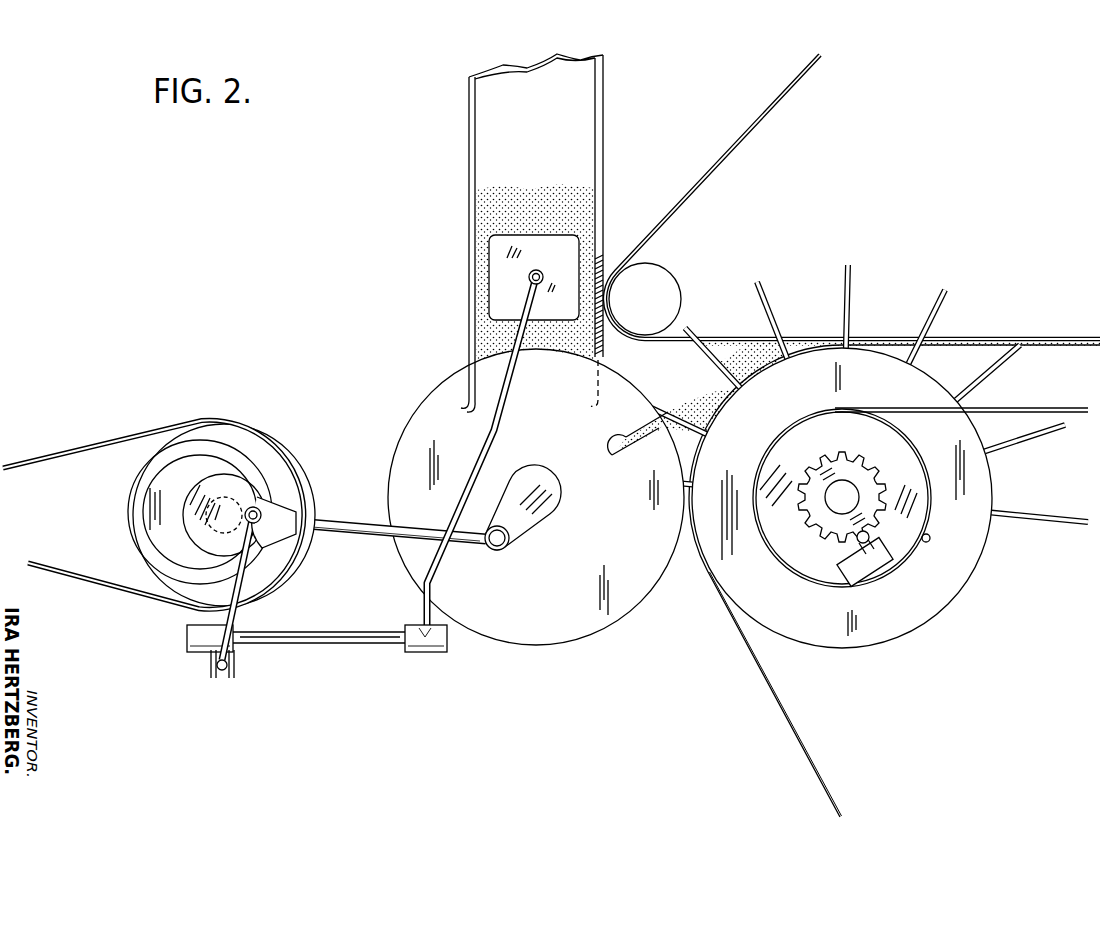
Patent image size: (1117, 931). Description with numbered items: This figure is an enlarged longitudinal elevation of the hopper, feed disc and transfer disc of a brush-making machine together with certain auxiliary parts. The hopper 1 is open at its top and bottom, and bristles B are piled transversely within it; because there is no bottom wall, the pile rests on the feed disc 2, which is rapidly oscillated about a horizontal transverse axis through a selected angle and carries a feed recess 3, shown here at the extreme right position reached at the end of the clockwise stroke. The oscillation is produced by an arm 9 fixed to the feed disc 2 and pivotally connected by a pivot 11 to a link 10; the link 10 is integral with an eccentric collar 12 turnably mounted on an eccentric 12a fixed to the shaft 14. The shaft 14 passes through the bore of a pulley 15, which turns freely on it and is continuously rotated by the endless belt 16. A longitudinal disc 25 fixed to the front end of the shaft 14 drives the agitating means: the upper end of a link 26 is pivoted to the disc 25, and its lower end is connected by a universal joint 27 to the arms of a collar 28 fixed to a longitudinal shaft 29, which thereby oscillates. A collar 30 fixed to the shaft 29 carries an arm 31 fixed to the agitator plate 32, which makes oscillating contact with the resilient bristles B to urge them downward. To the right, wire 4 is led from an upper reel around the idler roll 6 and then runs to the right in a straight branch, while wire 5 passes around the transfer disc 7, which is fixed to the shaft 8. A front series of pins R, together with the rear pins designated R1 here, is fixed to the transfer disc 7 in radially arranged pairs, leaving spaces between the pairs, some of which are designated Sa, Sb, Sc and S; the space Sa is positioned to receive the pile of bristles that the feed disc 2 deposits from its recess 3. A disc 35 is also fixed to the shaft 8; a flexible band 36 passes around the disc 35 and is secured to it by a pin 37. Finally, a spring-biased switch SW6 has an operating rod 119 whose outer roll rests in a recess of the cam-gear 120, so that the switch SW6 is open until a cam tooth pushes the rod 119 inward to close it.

The hopper 1 is at (603, 132).
The bristles B is at (511, 200).
The feed disc 2 is at (442, 402).
The feed recess 3 is at (618, 440).
The wire 4 is at (771, 108).
The wire 5 is at (1082, 349).
The idler roll 6 is at (654, 293).
The transfer disc 7 is at (965, 568).
The shaft 8 is at (850, 490).
The arm 9 is at (538, 530).
The link 10 is at (352, 537).
The pivot 11 is at (500, 549).
The eccentric collar 12 is at (222, 450).
The eccentric 12a is at (150, 505).
The shaft 14 is at (228, 533).
The pulley 15 is at (210, 432).
The endless belt 16 is at (52, 462).
The longitudinal disc 25 is at (249, 497).
The link 26 is at (241, 579).
The universal joint 27 is at (222, 670).
The collar 28 is at (193, 641).
The longitudinal shaft 29 is at (338, 641).
The collar 30 is at (425, 653).
The arm 31 is at (501, 440).
The agitator plate 32 is at (500, 262).
The disc 35 is at (932, 505).
The flexible band 36 is at (1084, 412).
The pin 37 is at (931, 538).
The operating rod 119 is at (858, 545).
The cam-gear 120 is at (838, 455).
The switch SW6 is at (880, 568).
The front pins R is at (770, 300).
The radial blade R1 is at (940, 292).
The space S is at (1039, 501).
The space Sa is at (658, 441).
The space Sb is at (823, 326).
The space Sc is at (1010, 398).